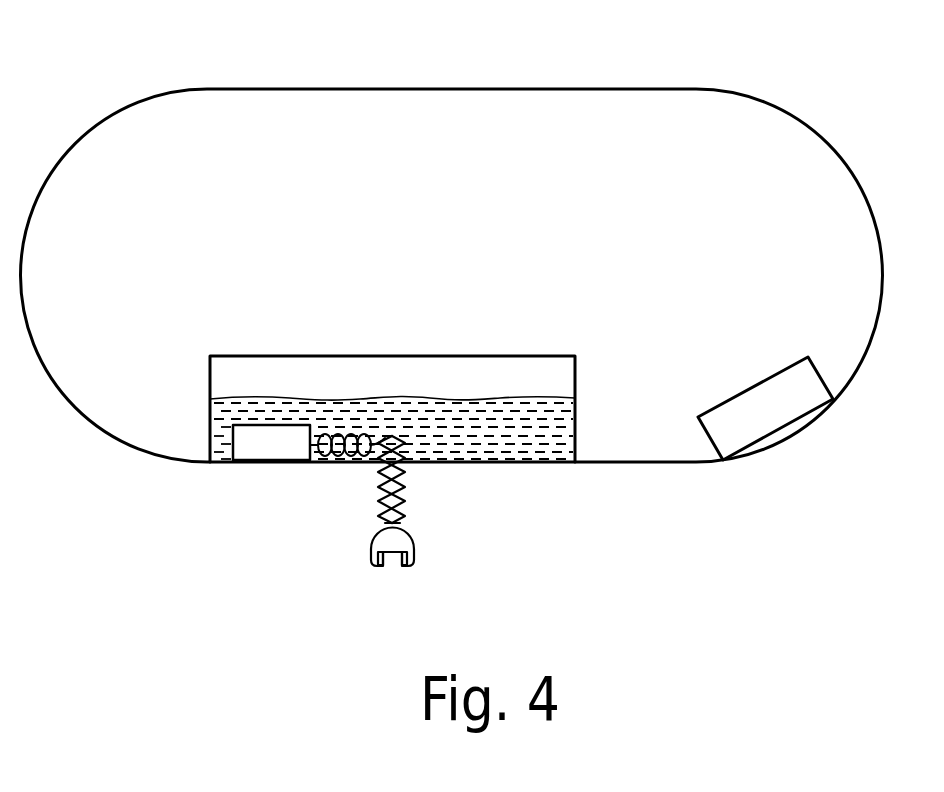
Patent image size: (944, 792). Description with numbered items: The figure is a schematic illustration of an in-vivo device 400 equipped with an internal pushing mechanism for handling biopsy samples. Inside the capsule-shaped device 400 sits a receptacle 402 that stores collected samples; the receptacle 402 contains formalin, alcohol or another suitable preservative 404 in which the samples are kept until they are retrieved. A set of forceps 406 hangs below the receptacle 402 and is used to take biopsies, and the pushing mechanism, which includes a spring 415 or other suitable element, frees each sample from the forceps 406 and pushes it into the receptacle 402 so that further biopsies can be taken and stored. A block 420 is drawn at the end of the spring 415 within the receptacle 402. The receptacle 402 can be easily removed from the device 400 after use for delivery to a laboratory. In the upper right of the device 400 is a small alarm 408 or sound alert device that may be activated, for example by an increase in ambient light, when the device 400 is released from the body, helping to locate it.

The in-vivo device 400 is at (123, 108).
The receptacle 402 is at (450, 375).
The preservative 404 is at (490, 437).
The forceps 406 is at (408, 530).
The alarm 408 is at (792, 387).
The spring 415 is at (337, 453).
The box component 420 is at (258, 445).